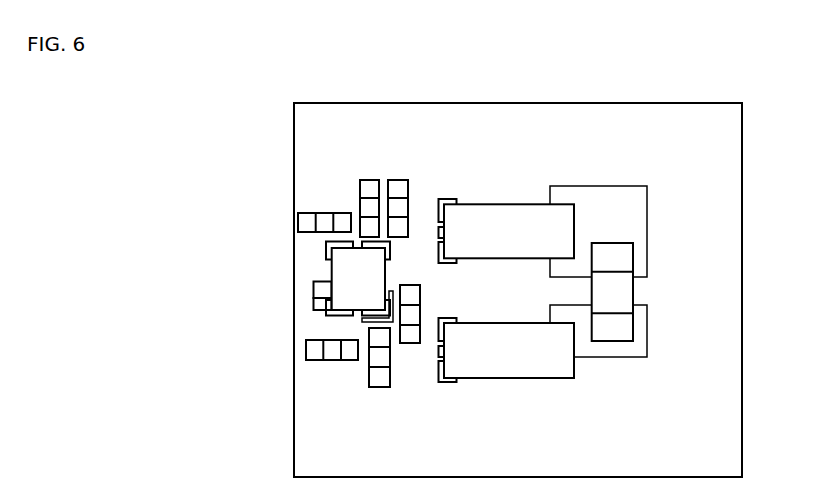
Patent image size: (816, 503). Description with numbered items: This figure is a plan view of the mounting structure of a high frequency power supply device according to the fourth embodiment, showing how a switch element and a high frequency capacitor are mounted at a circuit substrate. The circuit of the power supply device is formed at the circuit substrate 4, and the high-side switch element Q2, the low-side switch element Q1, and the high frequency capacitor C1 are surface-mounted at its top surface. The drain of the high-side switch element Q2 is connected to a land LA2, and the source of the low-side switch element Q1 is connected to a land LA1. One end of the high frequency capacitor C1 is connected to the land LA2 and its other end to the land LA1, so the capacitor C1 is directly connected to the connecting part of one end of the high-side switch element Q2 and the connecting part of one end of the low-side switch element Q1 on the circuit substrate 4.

The circuit substrate 4 is at (727, 125).
The high-side switch element Q2 is at (503, 210).
The low-side switch element Q1 is at (508, 365).
The land LA2 is at (635, 206).
The land LA1 is at (640, 350).
The high frequency capacitor C1 is at (625, 292).